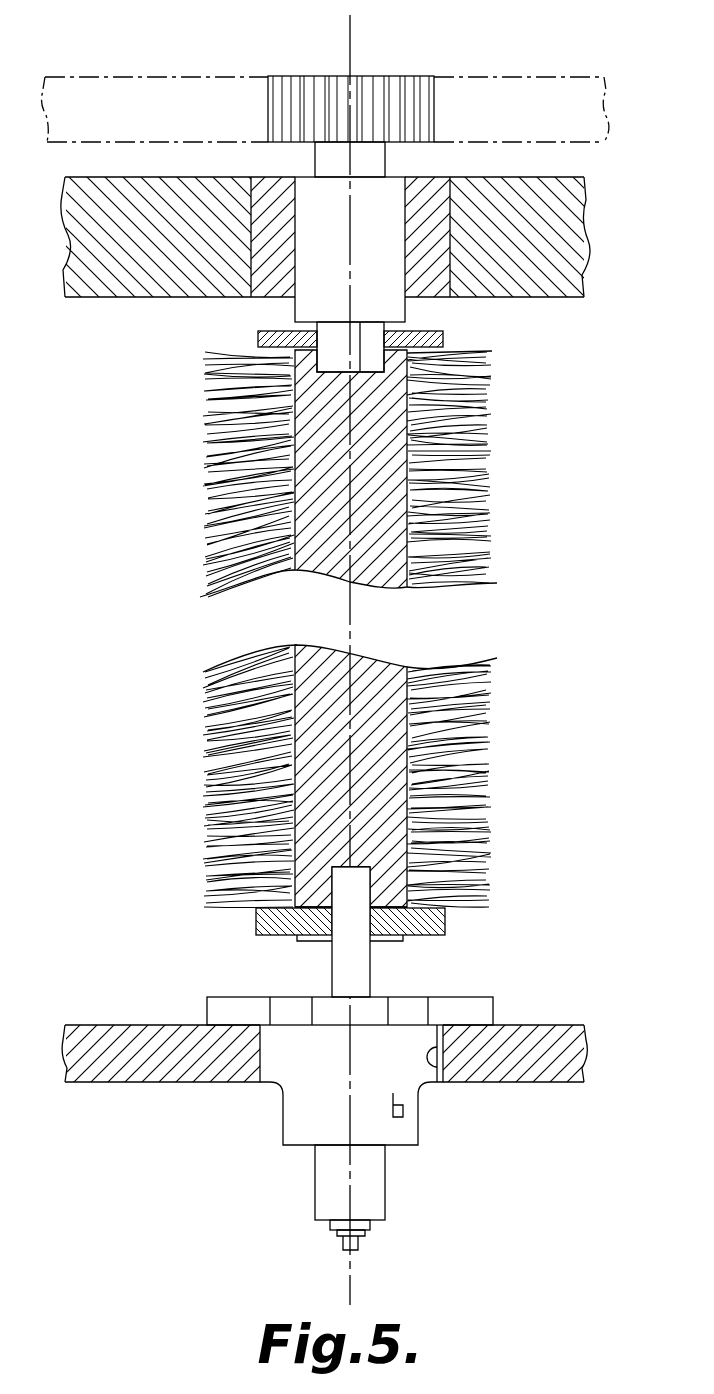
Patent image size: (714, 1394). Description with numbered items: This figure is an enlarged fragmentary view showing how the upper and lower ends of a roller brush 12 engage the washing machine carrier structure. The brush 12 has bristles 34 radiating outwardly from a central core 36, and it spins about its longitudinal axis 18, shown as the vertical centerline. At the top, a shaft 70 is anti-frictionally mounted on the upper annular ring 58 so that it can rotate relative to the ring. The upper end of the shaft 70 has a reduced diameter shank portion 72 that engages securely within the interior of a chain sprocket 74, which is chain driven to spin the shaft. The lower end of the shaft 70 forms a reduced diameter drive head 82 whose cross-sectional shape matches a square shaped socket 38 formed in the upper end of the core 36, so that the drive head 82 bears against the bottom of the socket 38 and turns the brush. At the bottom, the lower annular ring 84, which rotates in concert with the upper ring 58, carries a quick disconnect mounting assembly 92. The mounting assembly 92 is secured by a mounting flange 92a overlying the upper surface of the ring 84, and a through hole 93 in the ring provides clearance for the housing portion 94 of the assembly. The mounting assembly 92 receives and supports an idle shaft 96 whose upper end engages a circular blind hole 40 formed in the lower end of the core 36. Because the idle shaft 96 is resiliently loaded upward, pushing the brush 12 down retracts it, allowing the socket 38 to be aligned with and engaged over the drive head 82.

The roller brush 12 is at (505, 413).
The longitudinal axis 18 is at (352, 45).
The bristles 34 is at (205, 438).
The central core 36 is at (397, 460).
The socket 38 is at (477, 387).
The blind hole 40 is at (330, 873).
The upper annular ring 58 is at (75, 177).
The shaft 70 is at (315, 295).
The shank portion 72 is at (386, 162).
The chain sprocket 74 is at (285, 82).
The drive head 82 is at (375, 330).
The lower annular ring 84 is at (575, 1023).
The quick disconnect mounting assembly 92 is at (268, 1128).
The mounting flange 92a is at (493, 997).
The through hole 93 is at (430, 1082).
The housing portion 94 is at (301, 1072).
The idle shaft 96 is at (370, 957).